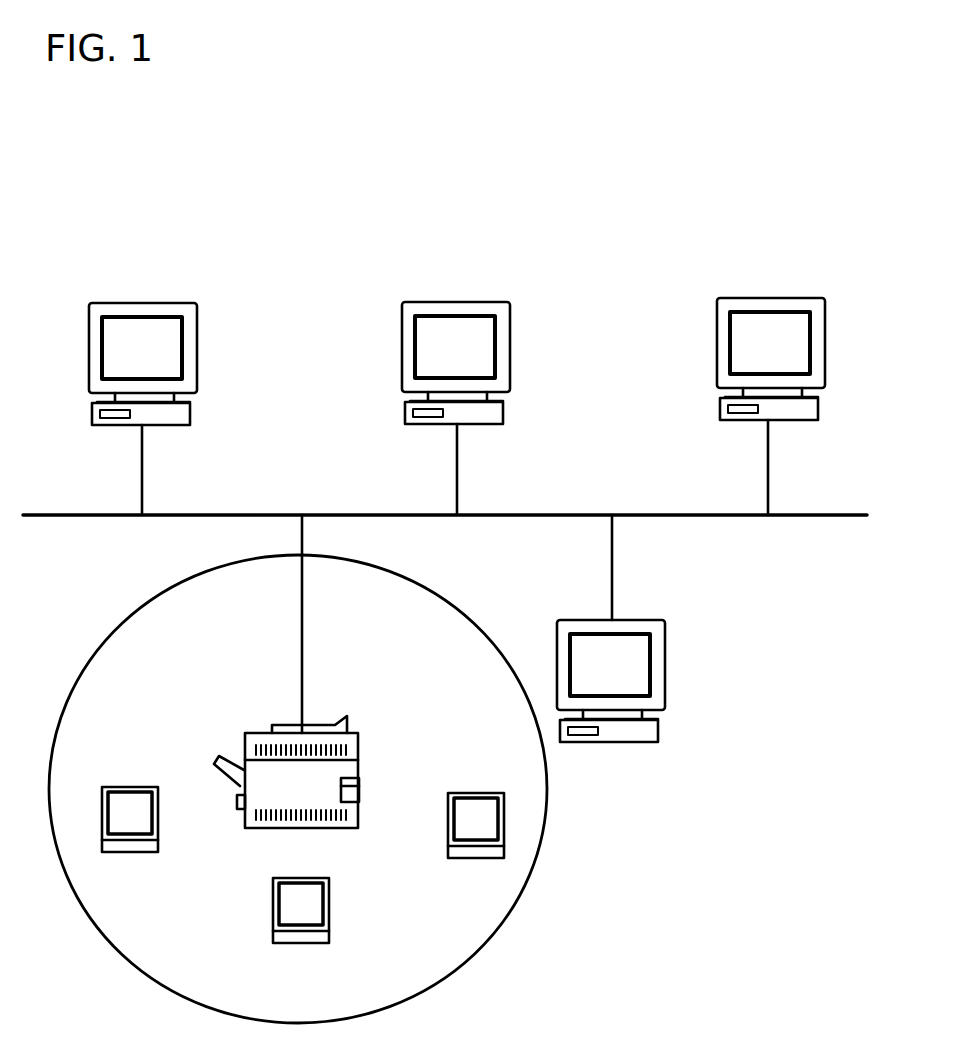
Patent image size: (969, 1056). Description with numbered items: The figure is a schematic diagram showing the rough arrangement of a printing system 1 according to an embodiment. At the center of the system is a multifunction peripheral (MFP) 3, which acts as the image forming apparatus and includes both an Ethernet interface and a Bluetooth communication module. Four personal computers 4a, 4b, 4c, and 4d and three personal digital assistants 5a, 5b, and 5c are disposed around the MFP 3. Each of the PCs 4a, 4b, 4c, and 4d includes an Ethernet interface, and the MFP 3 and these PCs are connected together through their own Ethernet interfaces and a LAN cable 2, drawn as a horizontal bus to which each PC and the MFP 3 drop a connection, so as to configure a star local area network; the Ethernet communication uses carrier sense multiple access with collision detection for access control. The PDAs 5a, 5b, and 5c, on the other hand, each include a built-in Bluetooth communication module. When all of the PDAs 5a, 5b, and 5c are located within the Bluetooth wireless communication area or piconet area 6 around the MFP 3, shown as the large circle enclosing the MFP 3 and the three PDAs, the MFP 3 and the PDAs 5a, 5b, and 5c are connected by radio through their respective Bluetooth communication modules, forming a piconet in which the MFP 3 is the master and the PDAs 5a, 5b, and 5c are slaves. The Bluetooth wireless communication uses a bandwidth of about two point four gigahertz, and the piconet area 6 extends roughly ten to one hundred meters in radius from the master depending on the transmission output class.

The printing system 1 is at (652, 191).
The LAN cable 2 is at (80, 517).
The multifunction peripheral (MFP) 3 is at (358, 765).
The personal computer 4a is at (157, 303).
The personal computer 4b is at (470, 302).
The personal computer 4c is at (785, 298).
The personal computer 4d is at (667, 680).
The personal digital assistant (PDA) 5a is at (135, 852).
The personal digital assistant (PDA) 5b is at (305, 943).
The personal digital assistant (PDA) 5c is at (478, 858).
The Bluetooth wireless communication area (piconet area) 6 is at (477, 953).